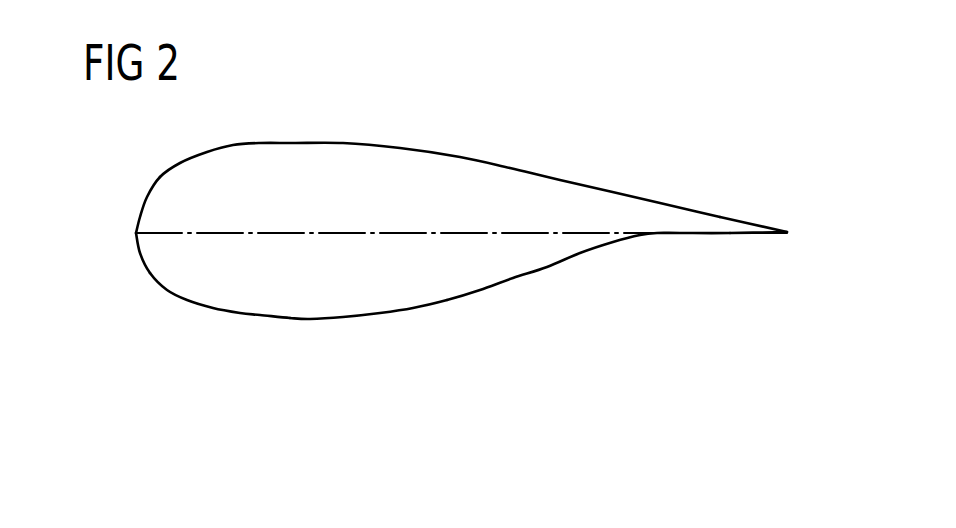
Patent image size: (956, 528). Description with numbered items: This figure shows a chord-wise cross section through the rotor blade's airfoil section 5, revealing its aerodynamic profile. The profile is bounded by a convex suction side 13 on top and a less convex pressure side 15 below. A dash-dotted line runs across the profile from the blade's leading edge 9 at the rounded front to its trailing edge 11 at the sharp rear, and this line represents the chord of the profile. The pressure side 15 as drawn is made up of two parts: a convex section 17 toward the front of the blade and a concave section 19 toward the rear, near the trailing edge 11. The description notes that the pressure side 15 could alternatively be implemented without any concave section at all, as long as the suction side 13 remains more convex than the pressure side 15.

The airfoil section 5 is at (467, 240).
The leading edge 9 is at (131, 233).
The trailing edge 11 is at (795, 232).
The suction side 13 is at (318, 143).
The pressure side 15 is at (317, 320).
The convex section 17 is at (222, 358).
The concave section 19 is at (645, 285).